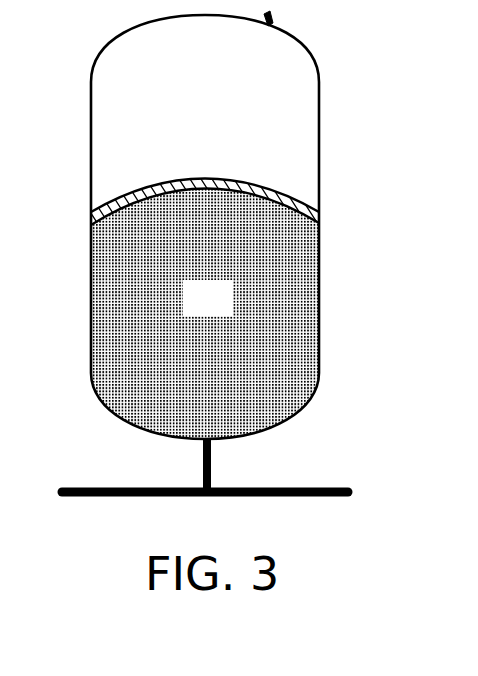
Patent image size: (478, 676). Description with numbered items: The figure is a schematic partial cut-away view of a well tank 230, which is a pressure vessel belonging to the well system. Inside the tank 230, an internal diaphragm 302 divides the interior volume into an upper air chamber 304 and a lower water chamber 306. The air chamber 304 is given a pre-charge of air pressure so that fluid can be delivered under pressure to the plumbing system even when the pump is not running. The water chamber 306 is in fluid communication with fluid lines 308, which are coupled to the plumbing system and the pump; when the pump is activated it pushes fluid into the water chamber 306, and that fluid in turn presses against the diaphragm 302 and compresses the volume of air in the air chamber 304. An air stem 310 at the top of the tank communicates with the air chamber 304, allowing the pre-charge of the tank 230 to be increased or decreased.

The well tank 230 is at (91, 115).
The internal diaphragm 302 is at (305, 203).
The air chamber 304 is at (205, 66).
The water chamber 306 is at (205, 313).
The fluid lines 308 is at (310, 488).
The air stem 310 is at (273, 19).